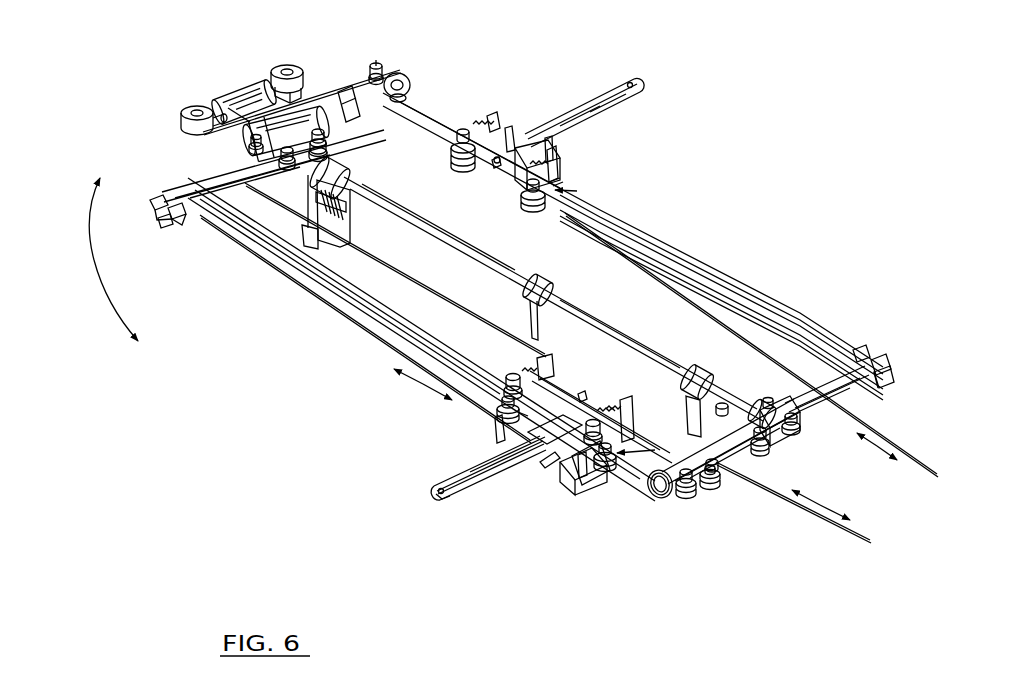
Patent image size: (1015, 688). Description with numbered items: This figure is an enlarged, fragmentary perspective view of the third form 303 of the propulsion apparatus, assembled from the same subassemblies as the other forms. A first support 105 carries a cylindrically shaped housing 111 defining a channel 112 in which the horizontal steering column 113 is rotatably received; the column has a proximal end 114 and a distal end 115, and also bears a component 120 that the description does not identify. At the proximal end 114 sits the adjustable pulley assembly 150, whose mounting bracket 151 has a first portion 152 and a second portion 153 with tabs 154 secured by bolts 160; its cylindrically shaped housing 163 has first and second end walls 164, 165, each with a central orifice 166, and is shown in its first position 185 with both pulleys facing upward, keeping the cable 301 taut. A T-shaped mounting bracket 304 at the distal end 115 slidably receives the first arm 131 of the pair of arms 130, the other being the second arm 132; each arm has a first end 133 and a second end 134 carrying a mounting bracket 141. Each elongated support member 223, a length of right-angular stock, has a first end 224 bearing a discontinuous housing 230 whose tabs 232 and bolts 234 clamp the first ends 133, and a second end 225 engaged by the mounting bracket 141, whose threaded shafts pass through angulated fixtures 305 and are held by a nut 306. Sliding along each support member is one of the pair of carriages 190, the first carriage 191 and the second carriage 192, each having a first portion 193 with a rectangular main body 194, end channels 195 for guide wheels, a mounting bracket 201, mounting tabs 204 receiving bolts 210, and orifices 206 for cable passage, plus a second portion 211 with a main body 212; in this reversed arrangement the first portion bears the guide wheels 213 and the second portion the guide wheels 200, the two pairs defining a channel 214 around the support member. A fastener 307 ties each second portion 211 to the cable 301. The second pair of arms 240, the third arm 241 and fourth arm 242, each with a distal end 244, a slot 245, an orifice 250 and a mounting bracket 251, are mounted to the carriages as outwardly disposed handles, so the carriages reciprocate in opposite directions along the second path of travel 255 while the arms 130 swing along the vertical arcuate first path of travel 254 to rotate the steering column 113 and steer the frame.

The first support 105 is at (346, 232).
The cylindrically shaped housing 111 is at (353, 170).
The channel 112 is at (345, 180).
The steering column 113 is at (593, 320).
The proximal end 114 is at (307, 208).
The distal end 115 is at (700, 373).
The tube collar with tab 120 is at (530, 316).
The pair of arms 130 is at (331, 102).
The first arm 131 is at (845, 397).
The second arm 132 is at (232, 178).
The first end of arm 133 is at (380, 130).
The second end of arm 134 is at (180, 190).
The mounting bracket 141 is at (883, 388).
The adjustable pulley assembly 150 is at (233, 88).
The mounting bracket 151 is at (328, 150).
The first portion 152 is at (280, 168).
The second portion 153 is at (248, 157).
The tabs 154 is at (292, 178).
The bolts 160 is at (305, 95).
The cylindrically shaped housing 163 is at (272, 78).
The first end wall 164 is at (288, 66).
The second end wall 165 is at (228, 97).
The orifice 166 is at (213, 130).
The first position 185 is at (224, 88).
The pair of carriages 190 is at (580, 121).
The first carriage 191 is at (562, 176).
The second carriage 192 is at (522, 413).
The first portion 193 is at (556, 137).
The main body 194 is at (508, 127).
The channels 195 is at (498, 404).
The guide wheels 200 is at (453, 167).
The mounting bracket 201 is at (570, 374).
The mounting tabs 204 is at (494, 116).
The orifices 206 is at (535, 430).
The bolts 210 is at (478, 122).
The second portion 211 is at (528, 170).
The main body 212 is at (514, 170).
The guide wheels 213 is at (500, 394).
The channel 214 is at (578, 191).
The elongated support member 223 is at (330, 290).
The first end 224 is at (405, 80).
The second end 225 is at (212, 236).
The discontinuous housing 230 is at (403, 73).
The tabs 232 is at (375, 66).
The bolts 234 is at (378, 64).
The second pair of arms 240 is at (556, 110).
The third arm 241 is at (600, 105).
The fourth arm 242 is at (533, 443).
The second end 244 is at (607, 85).
The slot 245 is at (438, 497).
The orifice 250 is at (628, 80).
The mounting bracket 251 is at (560, 448).
The first path of travel 254 is at (78, 268).
The second path of travel 255 is at (421, 386).
The cable 301 is at (907, 447).
The third form of the propulsion apparatus 303 is at (150, 122).
The T-shaped mounting bracket 304 is at (725, 403).
The angulated fixtures 305 is at (150, 201).
The nut 306 is at (168, 218).
The fastener 307 is at (495, 164).